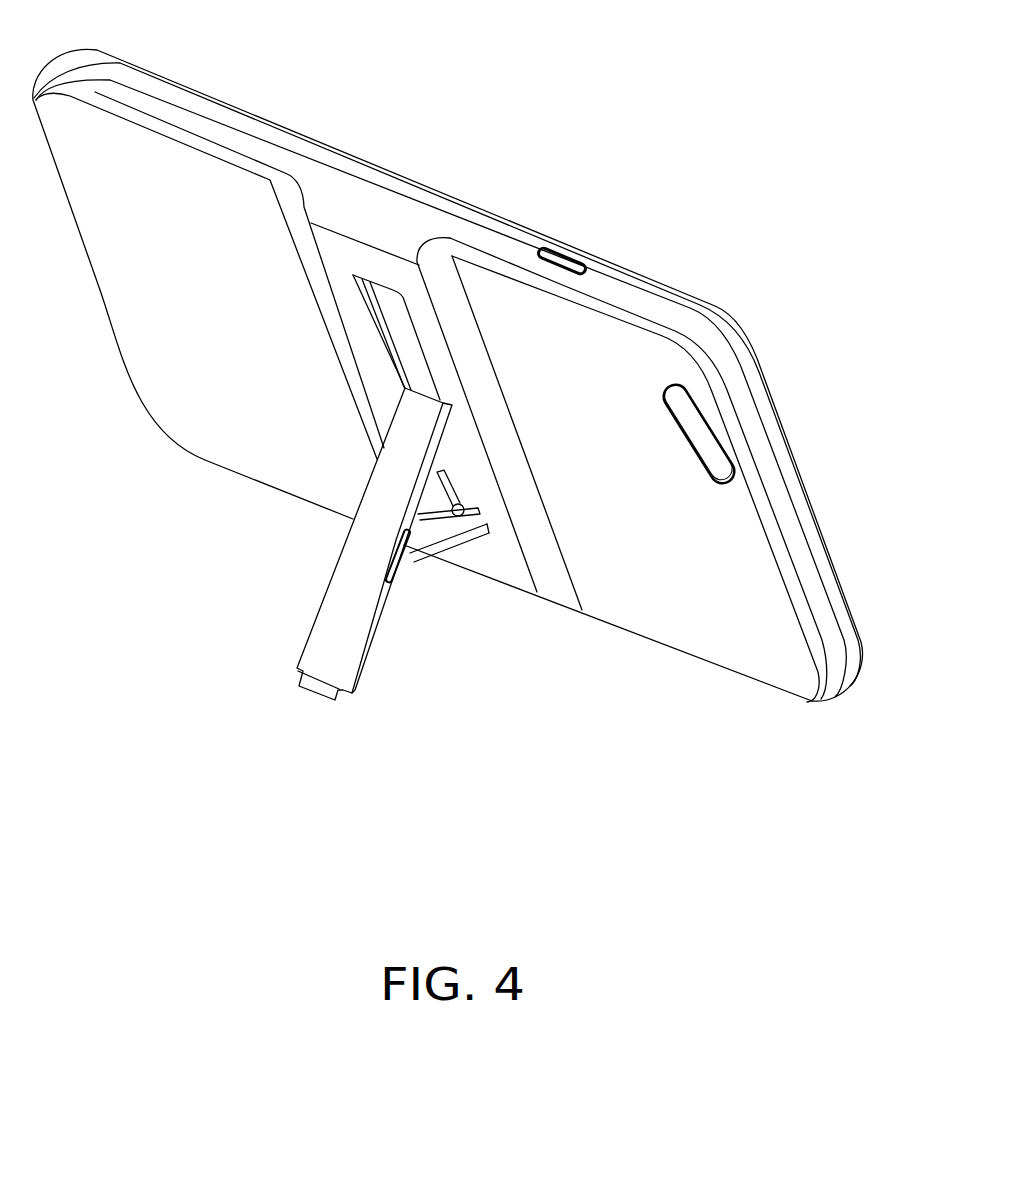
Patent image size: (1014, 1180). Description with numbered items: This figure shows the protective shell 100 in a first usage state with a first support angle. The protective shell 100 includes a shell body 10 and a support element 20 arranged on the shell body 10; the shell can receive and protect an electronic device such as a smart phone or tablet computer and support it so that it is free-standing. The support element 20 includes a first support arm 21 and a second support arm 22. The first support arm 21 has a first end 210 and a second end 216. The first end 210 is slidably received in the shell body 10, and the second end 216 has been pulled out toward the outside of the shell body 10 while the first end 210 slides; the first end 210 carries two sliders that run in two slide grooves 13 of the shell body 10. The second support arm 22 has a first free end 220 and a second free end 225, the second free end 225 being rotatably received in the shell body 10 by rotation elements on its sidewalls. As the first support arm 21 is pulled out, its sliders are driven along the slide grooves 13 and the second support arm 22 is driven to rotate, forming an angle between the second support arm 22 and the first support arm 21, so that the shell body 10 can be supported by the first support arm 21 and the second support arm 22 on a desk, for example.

The protective shell 100 is at (395, 82).
The shell body 10 is at (500, 228).
The slide grooves 13 is at (373, 300).
The support element 20 is at (500, 638).
The first support arm 21 is at (375, 628).
The first end 210 is at (407, 409).
The second end 216 is at (315, 685).
The first free end 220 is at (390, 605).
The second support arm 22 is at (413, 560).
The second free end 225 is at (462, 532).